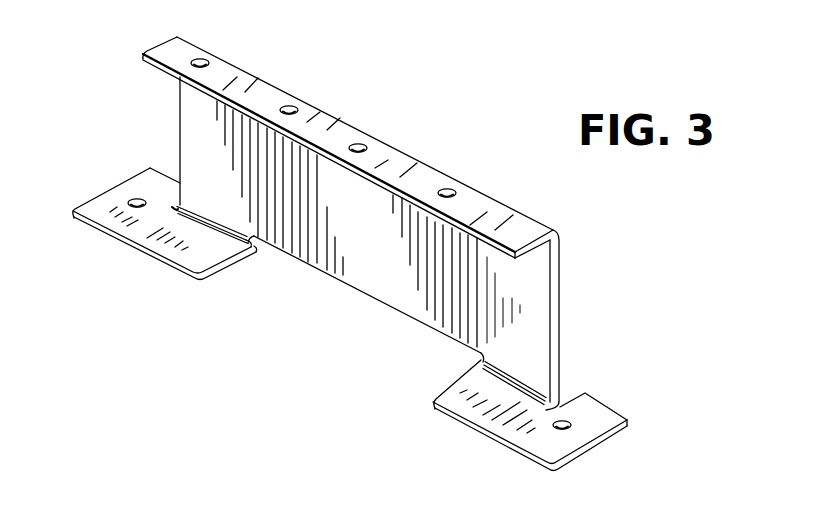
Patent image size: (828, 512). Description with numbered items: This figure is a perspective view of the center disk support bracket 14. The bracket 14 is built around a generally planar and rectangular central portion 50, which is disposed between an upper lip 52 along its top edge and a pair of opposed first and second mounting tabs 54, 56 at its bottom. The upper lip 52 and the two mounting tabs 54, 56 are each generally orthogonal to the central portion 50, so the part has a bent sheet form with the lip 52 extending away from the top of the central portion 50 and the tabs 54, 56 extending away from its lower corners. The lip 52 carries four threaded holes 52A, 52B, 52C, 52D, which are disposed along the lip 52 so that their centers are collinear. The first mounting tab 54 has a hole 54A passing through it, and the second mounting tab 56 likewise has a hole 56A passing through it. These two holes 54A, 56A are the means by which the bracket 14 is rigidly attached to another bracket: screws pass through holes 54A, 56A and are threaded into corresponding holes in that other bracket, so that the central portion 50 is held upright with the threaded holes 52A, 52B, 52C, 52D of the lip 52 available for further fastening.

The center disk support bracket 14 is at (453, 92).
The central portion 50 is at (563, 300).
The upper lip 52 is at (161, 72).
The threaded hole 52A is at (452, 187).
The threaded hole 52B is at (364, 142).
The threaded hole 52C is at (292, 103).
The threaded hole 52D is at (203, 57).
The first mounting tab 54 is at (463, 428).
The hole 54A is at (569, 431).
The second mounting tab 56 is at (133, 252).
The hole 56A is at (132, 199).